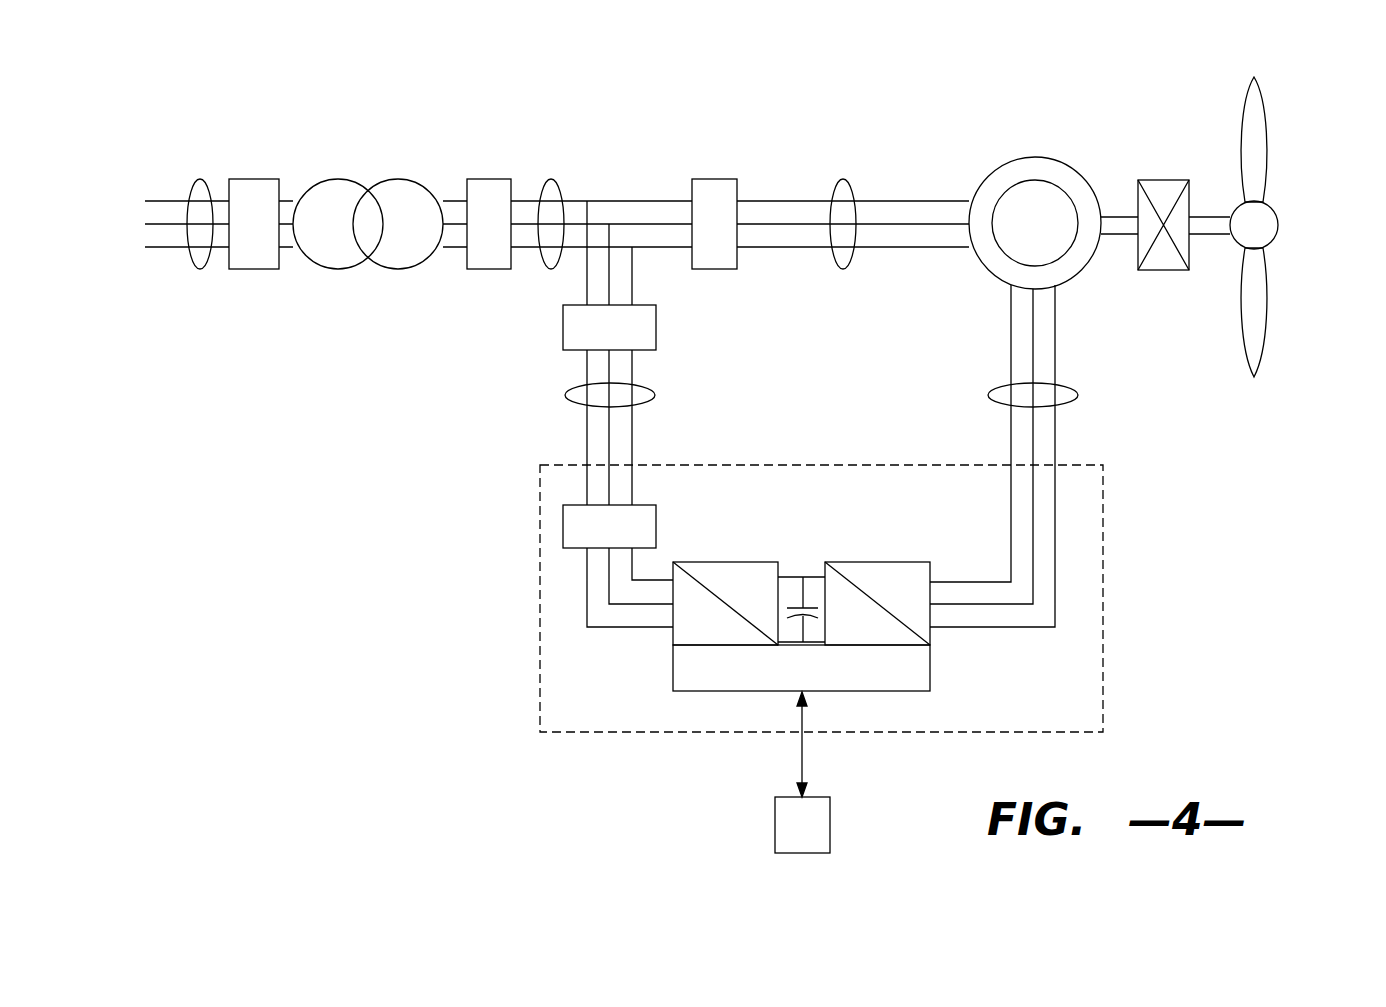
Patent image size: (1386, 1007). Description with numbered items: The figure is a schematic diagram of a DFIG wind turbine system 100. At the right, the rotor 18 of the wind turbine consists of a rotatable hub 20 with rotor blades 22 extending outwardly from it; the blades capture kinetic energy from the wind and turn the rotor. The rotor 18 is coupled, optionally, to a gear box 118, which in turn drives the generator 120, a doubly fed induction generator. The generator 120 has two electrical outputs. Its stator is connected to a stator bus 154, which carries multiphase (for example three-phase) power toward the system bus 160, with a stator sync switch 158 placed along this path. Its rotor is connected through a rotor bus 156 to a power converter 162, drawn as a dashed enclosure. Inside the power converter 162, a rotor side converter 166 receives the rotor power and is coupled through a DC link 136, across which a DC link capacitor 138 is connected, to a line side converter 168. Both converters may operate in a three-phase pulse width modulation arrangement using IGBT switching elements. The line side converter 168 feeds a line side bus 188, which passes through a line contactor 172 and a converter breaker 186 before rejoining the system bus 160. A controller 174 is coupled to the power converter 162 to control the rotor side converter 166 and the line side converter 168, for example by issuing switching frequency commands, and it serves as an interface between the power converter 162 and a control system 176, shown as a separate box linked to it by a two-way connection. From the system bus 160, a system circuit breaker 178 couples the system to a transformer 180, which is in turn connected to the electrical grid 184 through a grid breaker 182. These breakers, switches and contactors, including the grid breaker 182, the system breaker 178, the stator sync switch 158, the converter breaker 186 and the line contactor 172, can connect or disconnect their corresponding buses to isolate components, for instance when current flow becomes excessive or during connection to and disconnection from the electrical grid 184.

The rotor 18 is at (1301, 229).
The rotatable hub 20 is at (1279, 218).
The rotor blade 22 is at (1302, 133).
The DFIG wind turbine system 100 is at (408, 583).
The gear box 118 is at (1162, 180).
The generator 120 is at (1035, 158).
The DC link 136 is at (810, 576).
The DC link capacitor 138 is at (788, 606).
The stator bus 154 is at (843, 180).
The rotor bus 156 is at (1078, 398).
The stator sync switch 158 is at (715, 179).
The system bus 160 is at (552, 180).
The power converter 162 is at (1103, 568).
The rotor side converter 166 is at (930, 636).
The line side converter 168 is at (673, 636).
The line contactor 172 is at (563, 528).
The controller 174 is at (718, 692).
The control system 176 is at (830, 823).
The system circuit breaker 178 is at (487, 179).
The transformer 180 is at (398, 180).
The grid breaker 182 is at (253, 179).
The electrical grid 184 is at (200, 180).
The converter breaker 186 is at (563, 330).
The line side bus 188 is at (565, 400).